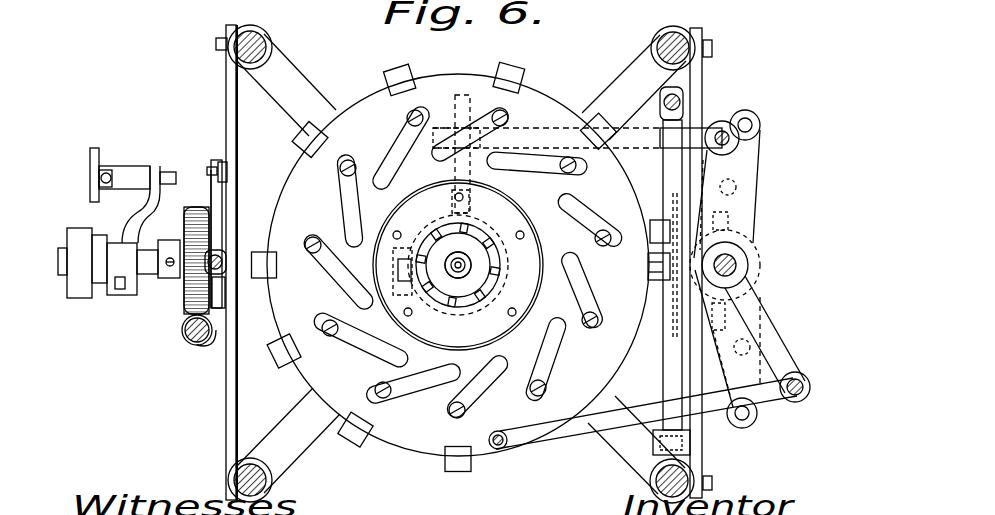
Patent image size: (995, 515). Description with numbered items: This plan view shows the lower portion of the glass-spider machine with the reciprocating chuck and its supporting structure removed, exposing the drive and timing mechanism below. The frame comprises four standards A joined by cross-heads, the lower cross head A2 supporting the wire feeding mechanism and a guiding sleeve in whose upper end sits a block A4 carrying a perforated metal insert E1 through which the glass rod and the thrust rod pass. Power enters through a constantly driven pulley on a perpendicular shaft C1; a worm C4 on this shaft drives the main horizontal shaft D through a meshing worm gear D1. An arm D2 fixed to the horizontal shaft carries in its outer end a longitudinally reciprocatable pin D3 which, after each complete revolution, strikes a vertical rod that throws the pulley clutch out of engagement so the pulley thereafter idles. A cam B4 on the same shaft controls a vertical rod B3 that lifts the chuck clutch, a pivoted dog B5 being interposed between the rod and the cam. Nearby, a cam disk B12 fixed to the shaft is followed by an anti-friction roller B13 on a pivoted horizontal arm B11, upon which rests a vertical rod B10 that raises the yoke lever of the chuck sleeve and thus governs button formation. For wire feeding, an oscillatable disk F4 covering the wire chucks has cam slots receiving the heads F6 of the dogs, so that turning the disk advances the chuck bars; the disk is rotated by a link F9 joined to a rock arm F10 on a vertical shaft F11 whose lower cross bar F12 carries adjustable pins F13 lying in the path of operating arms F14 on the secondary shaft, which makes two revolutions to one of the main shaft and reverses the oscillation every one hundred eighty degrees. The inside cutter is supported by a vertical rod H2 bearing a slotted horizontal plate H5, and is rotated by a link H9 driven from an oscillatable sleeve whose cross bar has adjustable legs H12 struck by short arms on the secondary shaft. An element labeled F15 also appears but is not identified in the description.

The standards A is at (693, 42).
The lower cross head A2 is at (632, 74).
The block A4 is at (480, 268).
The vertical rod B3 is at (222, 255).
The cam B4 is at (222, 313).
The pivoted dog B5 is at (222, 218).
The vertical rod B10 is at (682, 102).
The pivoted horizontal arm B11 is at (664, 385).
The cam disk B12 is at (650, 201).
The anti-friction roller B13 is at (663, 268).
The perpendicular shaft C1 is at (190, 343).
The worm C4 is at (183, 335).
The horizontal shaft D is at (97, 280).
The worm gear D1 is at (153, 268).
The arm D2 is at (155, 172).
The longitudinally reciprocatable pin D3 is at (100, 150).
The insert E1 is at (460, 280).
The disk F4 is at (447, 412).
The heads F6 is at (312, 253).
The link F9 is at (555, 438).
The rock arm F10 is at (775, 347).
The vertical shaft F11 is at (745, 266).
The cross bar F12 is at (752, 216).
The adjustable pins F13 is at (737, 188).
The operating arms F14 is at (594, 290).
The slot F15 is at (420, 383).
The vertical rod H2 is at (396, 272).
The horizontal projecting plate H5 is at (396, 280).
The link H9 is at (733, 167).
The adjustable legs H12 is at (753, 124).